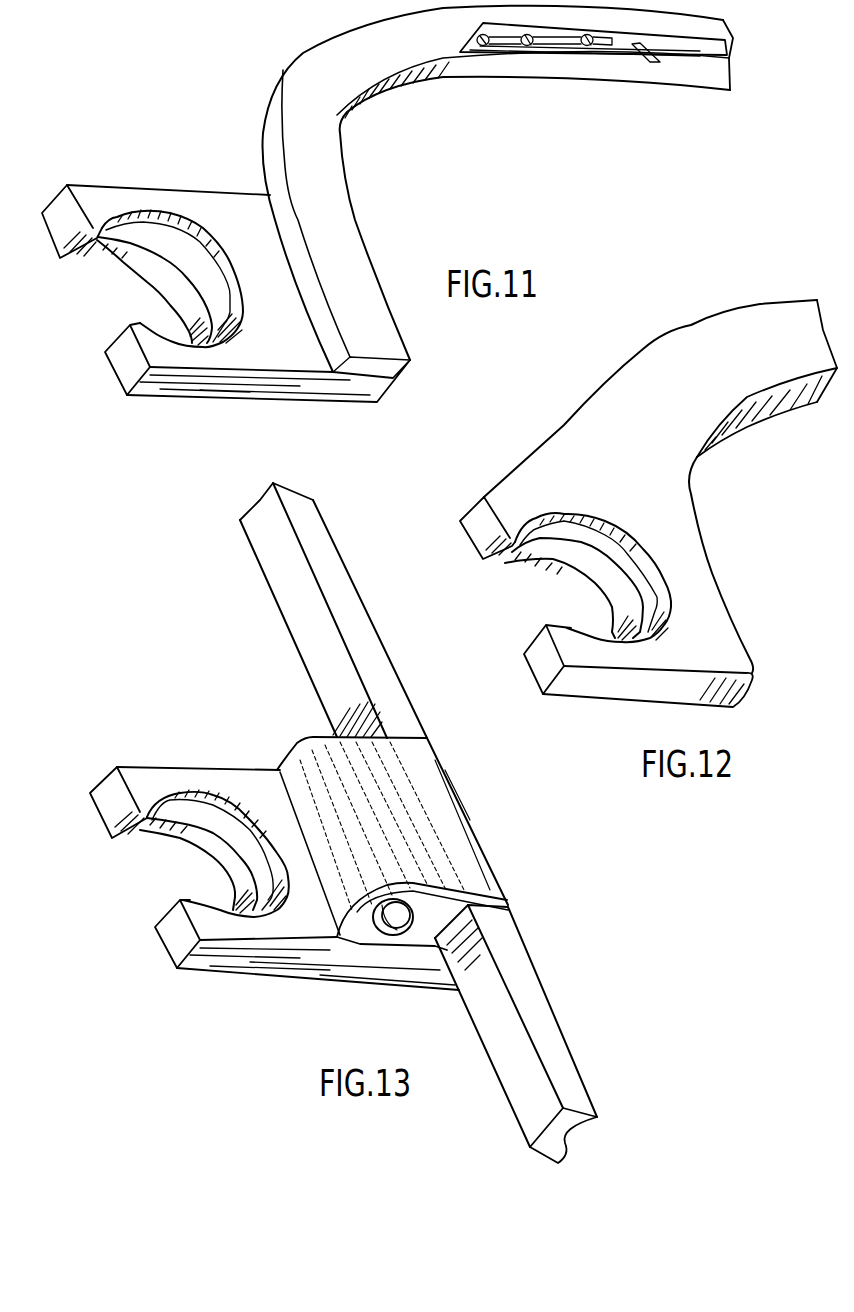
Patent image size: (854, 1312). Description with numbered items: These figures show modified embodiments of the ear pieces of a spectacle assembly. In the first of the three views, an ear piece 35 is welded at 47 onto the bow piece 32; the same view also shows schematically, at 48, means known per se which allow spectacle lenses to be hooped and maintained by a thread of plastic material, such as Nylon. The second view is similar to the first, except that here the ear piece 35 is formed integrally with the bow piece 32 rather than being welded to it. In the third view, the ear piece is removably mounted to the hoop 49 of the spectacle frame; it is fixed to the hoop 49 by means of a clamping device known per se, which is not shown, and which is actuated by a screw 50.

In FIG. 11, the bow piece 32 is at (340, 37).
In FIG. 12, the bow piece 32 is at (691, 349).
In FIG. 11, the ear piece 35 is at (87, 245).
In FIG. 12, the ear piece 35 is at (546, 576).
In FIG. 13, the ear piece 35 is at (214, 853).
In FIG. 11, the weld 47 is at (365, 378).
In FIG. 11, the means for hooping and maintaining spectacle lenses by a thread 48 is at (608, 44).
In FIG. 13, the hoop 49 is at (393, 717).
In FIG. 13, the screw 50 is at (405, 932).